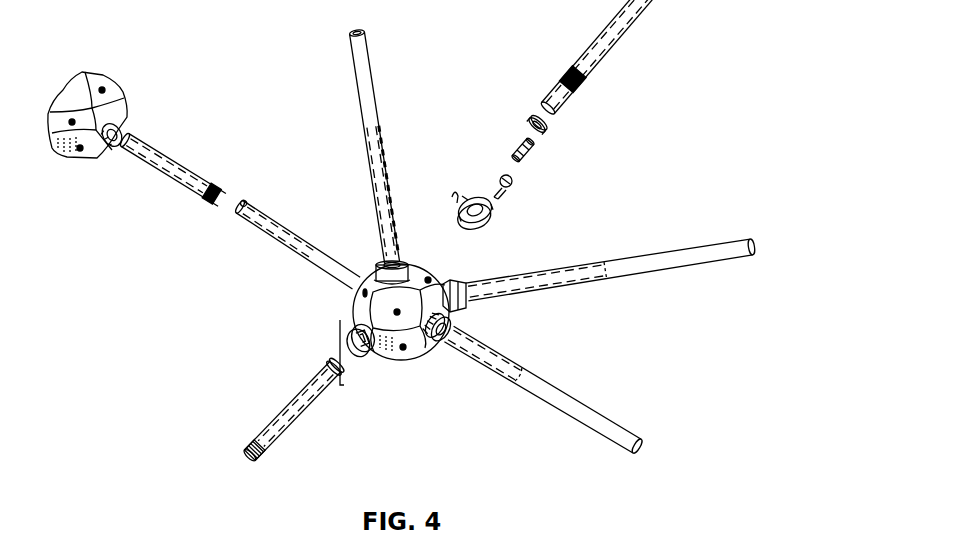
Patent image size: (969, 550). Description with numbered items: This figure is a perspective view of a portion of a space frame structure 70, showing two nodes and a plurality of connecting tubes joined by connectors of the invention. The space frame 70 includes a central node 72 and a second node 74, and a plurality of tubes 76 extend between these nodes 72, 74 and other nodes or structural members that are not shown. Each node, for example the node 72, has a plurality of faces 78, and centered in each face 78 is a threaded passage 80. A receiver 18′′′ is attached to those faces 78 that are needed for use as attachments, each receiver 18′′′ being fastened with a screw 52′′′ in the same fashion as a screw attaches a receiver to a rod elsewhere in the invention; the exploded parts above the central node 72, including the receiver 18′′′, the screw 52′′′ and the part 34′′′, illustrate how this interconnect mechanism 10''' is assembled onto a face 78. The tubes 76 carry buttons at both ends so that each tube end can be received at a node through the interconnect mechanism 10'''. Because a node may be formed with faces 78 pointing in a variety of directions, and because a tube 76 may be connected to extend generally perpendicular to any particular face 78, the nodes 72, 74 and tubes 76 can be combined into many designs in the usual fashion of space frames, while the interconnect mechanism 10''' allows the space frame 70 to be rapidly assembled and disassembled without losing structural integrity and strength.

The interconnect mechanism 10''' is at (480, 327).
The receiver 18′′′ is at (108, 150).
The pin 34′′′ is at (528, 153).
The screw 52′′′ is at (499, 194).
The space frame structure 70 is at (202, 328).
The node 72 is at (410, 364).
The node 74 is at (114, 73).
The tube 76 is at (192, 173).
The face 78 is at (80, 160).
The threaded passage 80 is at (70, 121).